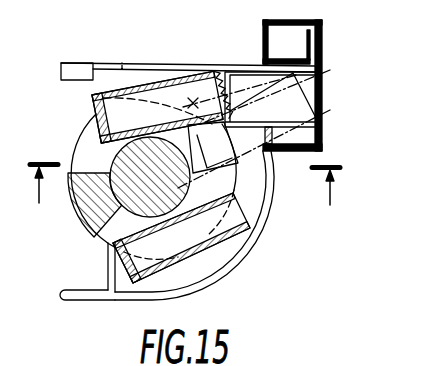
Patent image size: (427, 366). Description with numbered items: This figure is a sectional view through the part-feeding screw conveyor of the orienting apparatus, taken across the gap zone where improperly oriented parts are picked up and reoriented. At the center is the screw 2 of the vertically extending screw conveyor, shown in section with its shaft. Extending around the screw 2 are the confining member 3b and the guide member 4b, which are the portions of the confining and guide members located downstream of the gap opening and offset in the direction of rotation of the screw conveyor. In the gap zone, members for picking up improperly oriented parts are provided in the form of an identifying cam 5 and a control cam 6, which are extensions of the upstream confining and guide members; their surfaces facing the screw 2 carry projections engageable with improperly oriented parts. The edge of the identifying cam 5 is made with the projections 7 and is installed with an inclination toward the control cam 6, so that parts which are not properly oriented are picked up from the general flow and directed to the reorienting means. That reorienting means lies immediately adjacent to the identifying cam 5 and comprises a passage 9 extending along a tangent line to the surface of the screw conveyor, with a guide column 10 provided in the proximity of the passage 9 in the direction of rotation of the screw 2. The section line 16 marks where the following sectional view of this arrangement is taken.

The screw 2 is at (104, 232).
The identifying cam 5 is at (228, 108).
The control cam 6 is at (96, 62).
The projections 7 is at (72, 76).
The passage 9 is at (307, 82).
The guide column 10 is at (295, 151).
The confining member 3b is at (256, 247).
The guide member 4b is at (82, 292).
The section line 16 is at (186, 208).